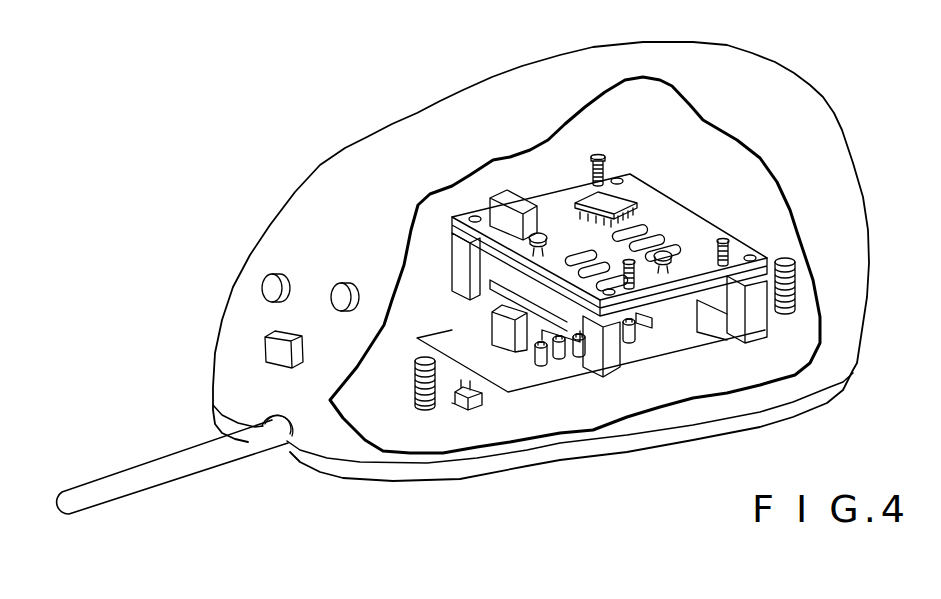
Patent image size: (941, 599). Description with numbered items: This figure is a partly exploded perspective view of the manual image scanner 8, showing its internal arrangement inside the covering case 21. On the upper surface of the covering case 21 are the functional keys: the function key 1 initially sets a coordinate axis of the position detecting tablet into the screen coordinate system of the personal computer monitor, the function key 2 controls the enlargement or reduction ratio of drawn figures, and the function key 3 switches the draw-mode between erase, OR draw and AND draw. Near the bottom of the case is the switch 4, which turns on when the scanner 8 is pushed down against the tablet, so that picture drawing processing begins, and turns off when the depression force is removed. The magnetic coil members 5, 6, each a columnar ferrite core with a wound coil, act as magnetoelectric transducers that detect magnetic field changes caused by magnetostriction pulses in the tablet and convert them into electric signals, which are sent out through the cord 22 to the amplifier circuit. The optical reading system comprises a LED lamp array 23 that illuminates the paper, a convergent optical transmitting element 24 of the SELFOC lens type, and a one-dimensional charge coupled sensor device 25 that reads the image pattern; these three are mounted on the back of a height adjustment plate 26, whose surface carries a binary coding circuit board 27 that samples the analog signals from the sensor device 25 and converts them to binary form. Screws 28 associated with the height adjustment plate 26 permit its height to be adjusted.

The function key 1 is at (305, 352).
The function key 2 is at (272, 278).
The function key 3 is at (343, 290).
The switch 4 is at (457, 410).
The magnetic coil member 5 is at (416, 402).
The magnetic coil member 6 is at (790, 312).
The manual image scanner 8 is at (478, 278).
The covering case 21 is at (847, 157).
The cord 22 is at (160, 465).
The LED lamp array 23 is at (538, 365).
The convergent optical transmitting element 24 is at (497, 318).
The one-dimensional charge coupled sensor device 25 is at (566, 340).
The height adjustment plate 26 is at (692, 305).
The upper circuit board 27 is at (690, 220).
The screw 28 is at (608, 154).